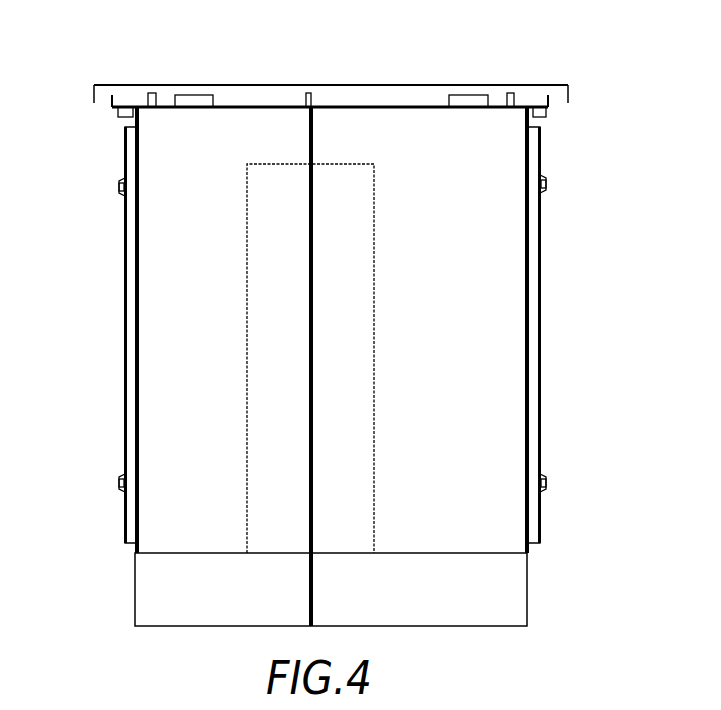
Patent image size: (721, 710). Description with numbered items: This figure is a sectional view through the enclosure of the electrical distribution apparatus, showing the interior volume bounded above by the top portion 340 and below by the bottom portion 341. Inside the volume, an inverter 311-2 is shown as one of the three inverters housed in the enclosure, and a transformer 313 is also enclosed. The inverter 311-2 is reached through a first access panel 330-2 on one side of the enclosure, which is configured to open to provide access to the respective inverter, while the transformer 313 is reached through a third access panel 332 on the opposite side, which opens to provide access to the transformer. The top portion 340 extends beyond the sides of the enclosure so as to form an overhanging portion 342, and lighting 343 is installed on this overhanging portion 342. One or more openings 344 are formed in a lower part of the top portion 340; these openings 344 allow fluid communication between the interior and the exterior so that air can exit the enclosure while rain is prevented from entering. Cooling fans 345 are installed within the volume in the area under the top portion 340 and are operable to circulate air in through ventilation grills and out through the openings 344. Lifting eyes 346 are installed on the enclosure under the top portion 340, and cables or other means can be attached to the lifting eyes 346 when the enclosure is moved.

The first access panel 330-2 is at (125, 320).
The third access panel 332 is at (540, 338).
The bottom portion 341 is at (203, 626).
The inverter 311-2 is at (247, 272).
The transformer 313 is at (374, 260).
The top portion 340 is at (390, 85).
The cooling fan 345 is at (200, 95).
The lifting eye 346 is at (152, 92).
The lighting 343 is at (118, 110).
The opening 344 is at (92, 74).
The overhanging portion 342 is at (96, 140).